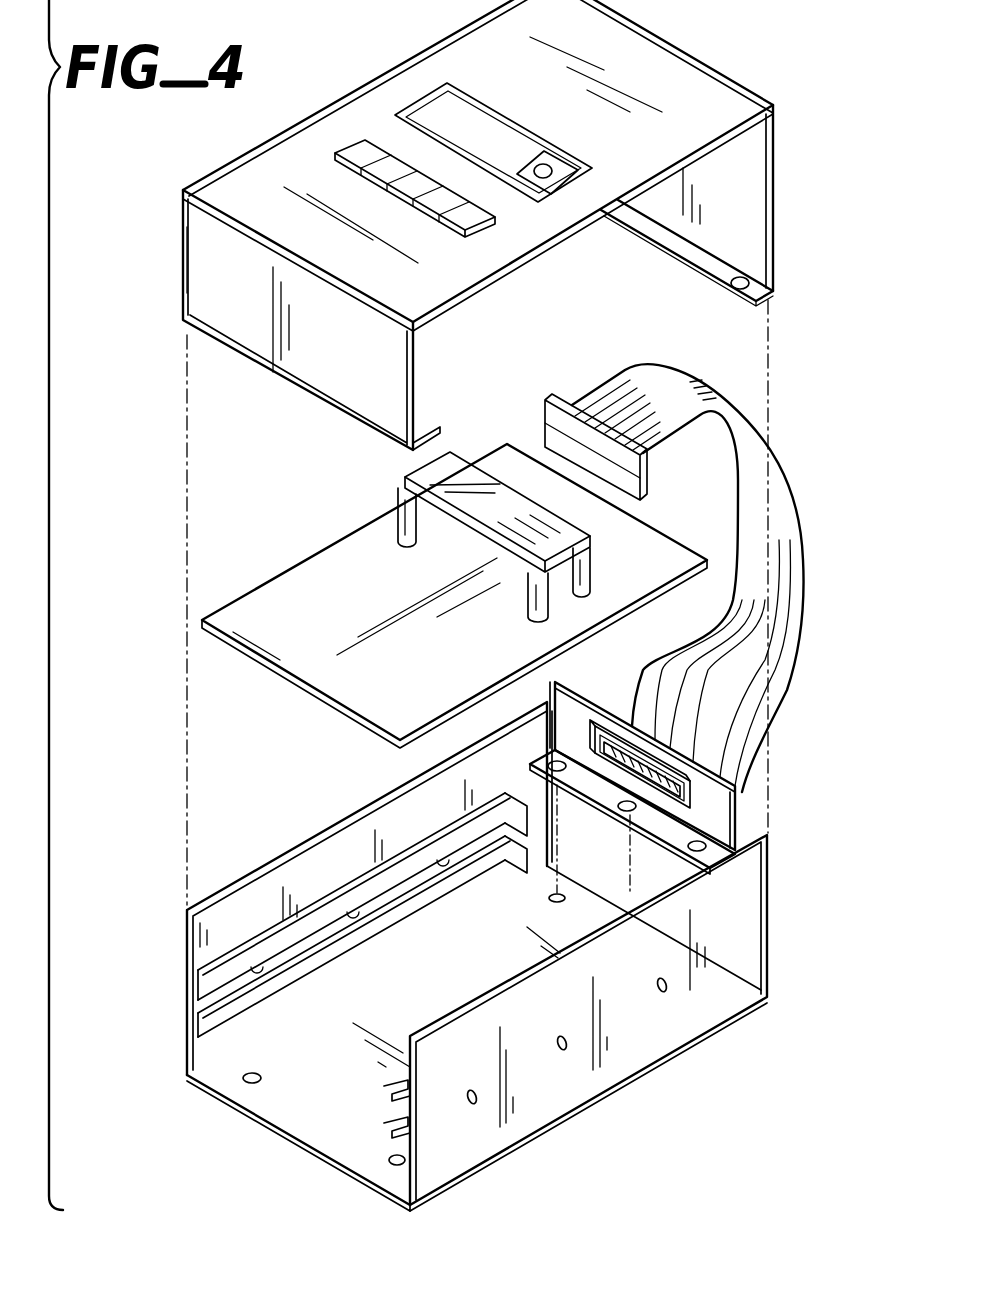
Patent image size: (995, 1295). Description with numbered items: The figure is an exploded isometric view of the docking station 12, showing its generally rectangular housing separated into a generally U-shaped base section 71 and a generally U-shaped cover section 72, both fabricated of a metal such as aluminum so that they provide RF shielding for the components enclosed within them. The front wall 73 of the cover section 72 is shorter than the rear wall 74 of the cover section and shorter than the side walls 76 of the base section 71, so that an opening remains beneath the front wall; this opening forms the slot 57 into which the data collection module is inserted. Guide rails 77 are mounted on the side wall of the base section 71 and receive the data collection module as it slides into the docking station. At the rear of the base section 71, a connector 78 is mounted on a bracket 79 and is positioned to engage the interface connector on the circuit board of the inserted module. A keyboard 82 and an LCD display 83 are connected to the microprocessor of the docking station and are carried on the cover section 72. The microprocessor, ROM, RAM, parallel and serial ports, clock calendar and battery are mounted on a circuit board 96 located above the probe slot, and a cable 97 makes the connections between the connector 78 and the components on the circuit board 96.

The housing 12 is at (613, 1122).
The slot 57 is at (270, 1096).
The base section 71 is at (479, 956).
The cover section 72 is at (250, 366).
The front wall 73 is at (210, 257).
The rear wall 74 is at (733, 200).
The side walls 76 is at (335, 840).
The guide rails 77 is at (293, 975).
The connector 78 is at (692, 776).
The bracket 79 is at (745, 768).
The keyboard 82 is at (480, 228).
The LCD display 83 is at (403, 482).
The circuit board 96 is at (276, 651).
The cable 97 is at (783, 498).